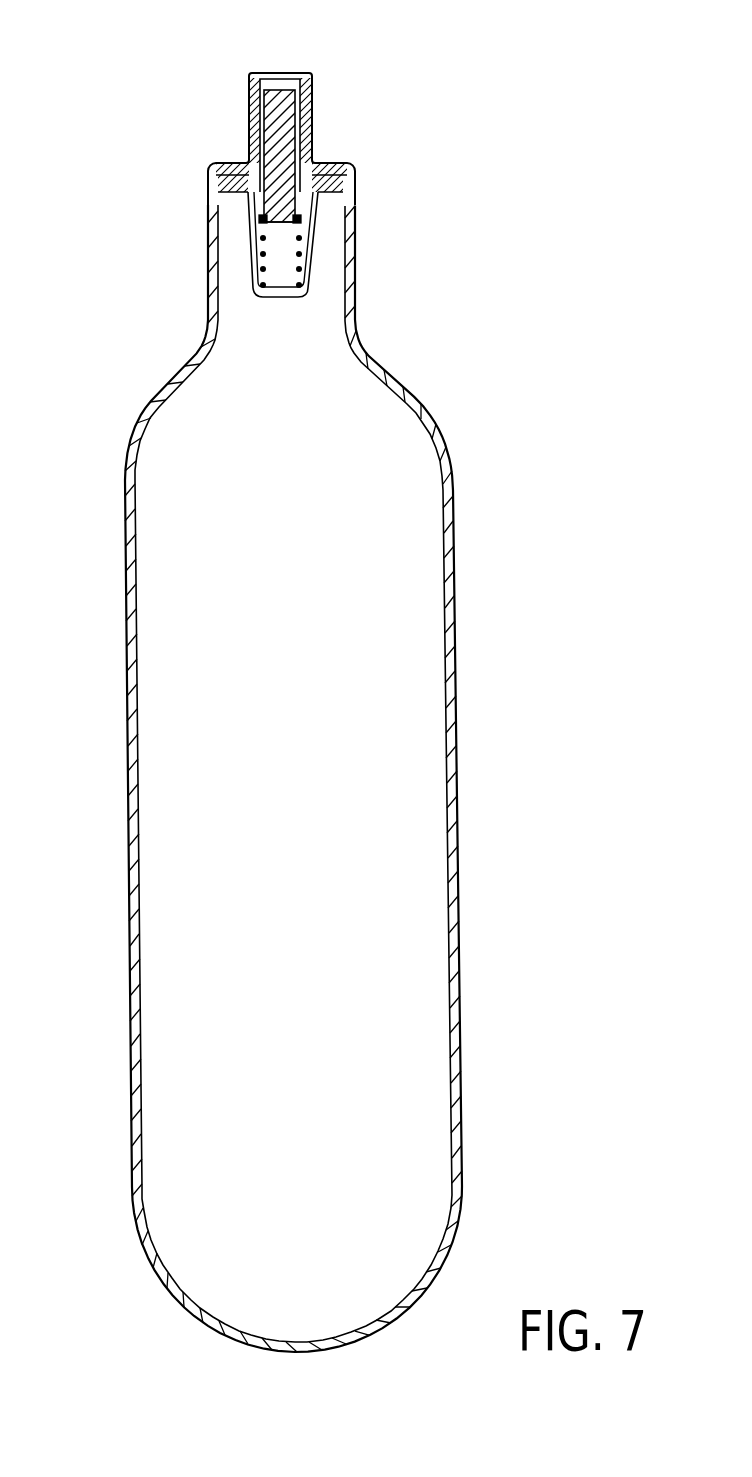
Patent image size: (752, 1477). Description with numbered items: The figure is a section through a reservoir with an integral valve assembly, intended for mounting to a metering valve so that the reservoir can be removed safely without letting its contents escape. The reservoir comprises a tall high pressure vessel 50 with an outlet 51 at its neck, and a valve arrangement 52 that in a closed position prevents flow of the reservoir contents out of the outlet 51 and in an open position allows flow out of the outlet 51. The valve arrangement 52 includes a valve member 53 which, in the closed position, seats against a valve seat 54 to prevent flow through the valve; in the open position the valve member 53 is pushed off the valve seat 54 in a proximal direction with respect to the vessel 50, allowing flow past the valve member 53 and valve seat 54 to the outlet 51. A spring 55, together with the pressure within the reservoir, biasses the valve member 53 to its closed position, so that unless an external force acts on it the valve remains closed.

The high pressure vessel 50 is at (127, 678).
The outlet 51 is at (286, 73).
The valve arrangement 52 is at (352, 125).
The valve member 53 is at (270, 118).
The valve seat 54 is at (247, 207).
The spring 55 is at (303, 268).